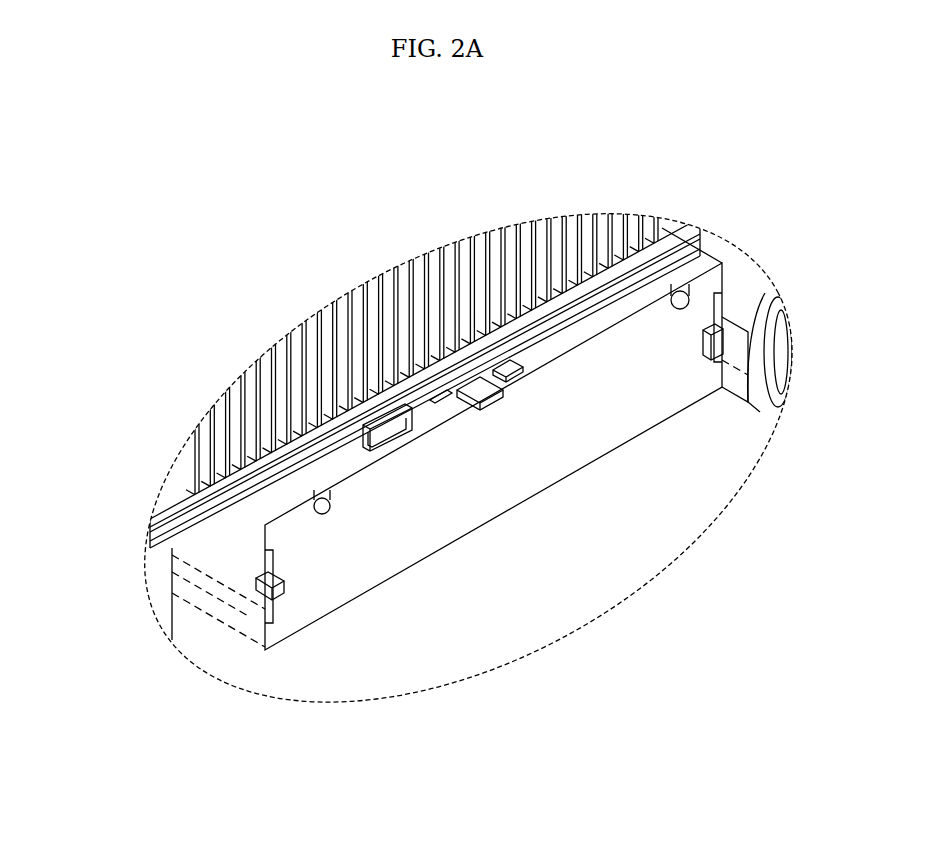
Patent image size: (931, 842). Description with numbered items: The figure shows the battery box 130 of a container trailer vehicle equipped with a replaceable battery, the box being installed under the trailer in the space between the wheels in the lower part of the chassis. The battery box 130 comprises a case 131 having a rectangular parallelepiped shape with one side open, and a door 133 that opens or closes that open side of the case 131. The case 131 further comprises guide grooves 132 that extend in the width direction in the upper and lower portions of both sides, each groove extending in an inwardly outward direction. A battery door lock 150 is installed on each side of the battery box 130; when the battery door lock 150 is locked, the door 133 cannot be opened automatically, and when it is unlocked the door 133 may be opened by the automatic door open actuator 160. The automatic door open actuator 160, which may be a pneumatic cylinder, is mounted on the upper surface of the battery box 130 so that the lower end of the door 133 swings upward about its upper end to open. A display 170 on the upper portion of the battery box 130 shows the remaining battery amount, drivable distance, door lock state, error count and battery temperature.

The battery box 130 is at (483, 500).
The case 131 is at (205, 547).
The guide grooves 132 is at (178, 592).
The door 133 is at (642, 404).
The battery door lock 150 is at (252, 598).
The automatic door open actuator 160 is at (303, 485).
The display 170 is at (420, 402).